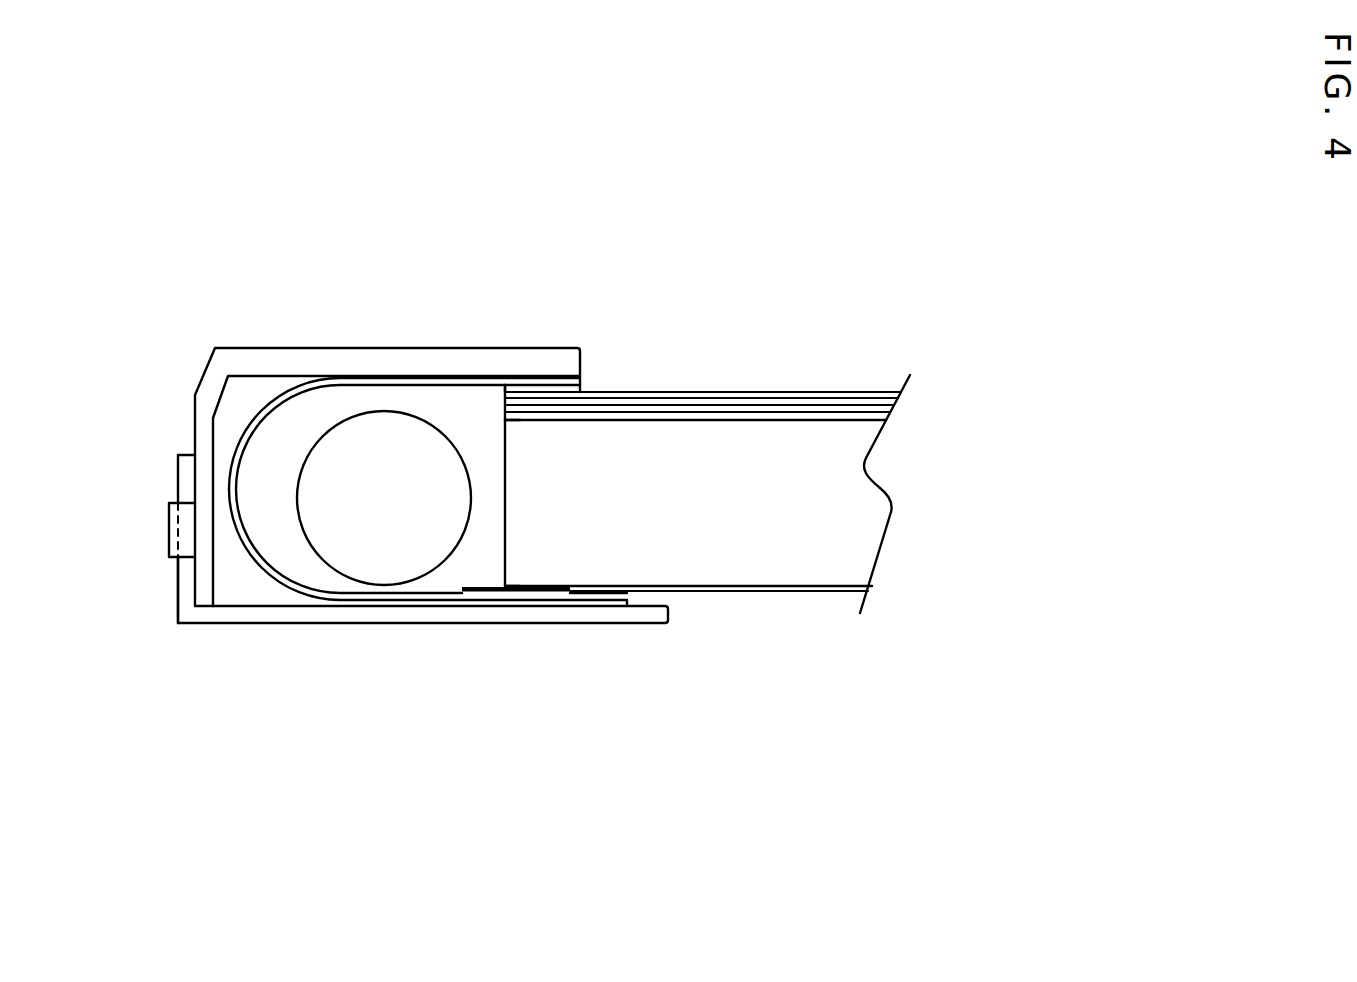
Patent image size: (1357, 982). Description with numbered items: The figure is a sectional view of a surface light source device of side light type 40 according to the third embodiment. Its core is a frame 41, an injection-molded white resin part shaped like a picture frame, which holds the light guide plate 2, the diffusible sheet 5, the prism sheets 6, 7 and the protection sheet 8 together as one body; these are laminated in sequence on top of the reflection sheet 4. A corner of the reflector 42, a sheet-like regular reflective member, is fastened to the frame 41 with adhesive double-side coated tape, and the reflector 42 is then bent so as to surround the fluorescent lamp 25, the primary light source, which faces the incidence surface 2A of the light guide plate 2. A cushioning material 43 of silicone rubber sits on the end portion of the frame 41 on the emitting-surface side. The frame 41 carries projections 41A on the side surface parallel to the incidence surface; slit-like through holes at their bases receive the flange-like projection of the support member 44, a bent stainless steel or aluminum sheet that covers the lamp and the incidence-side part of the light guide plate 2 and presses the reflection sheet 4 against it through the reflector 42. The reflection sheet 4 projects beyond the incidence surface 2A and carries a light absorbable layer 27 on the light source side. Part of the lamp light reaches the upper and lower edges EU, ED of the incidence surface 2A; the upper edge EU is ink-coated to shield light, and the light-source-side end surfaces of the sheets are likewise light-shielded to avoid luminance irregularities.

The surface light source device of side light type 40 is at (146, 767).
The frame 41 is at (258, 372).
The projection 41A is at (157, 486).
The reflector 42 is at (366, 382).
The cushioning material 43 is at (540, 388).
The support member 44 is at (637, 608).
The fluorescent lamp 25 is at (396, 558).
The light absorbable layer 27 is at (537, 592).
The light guide plate 2 is at (745, 494).
The incidence surface 2A is at (507, 512).
The upper edge EU is at (508, 423).
The lower edge ED is at (512, 583).
The protection sheet 8 is at (650, 397).
The prism sheet 7 is at (715, 403).
The prism sheet 6 is at (776, 411).
The diffusible sheet 5 is at (831, 419).
The reflection sheet 4 is at (814, 589).